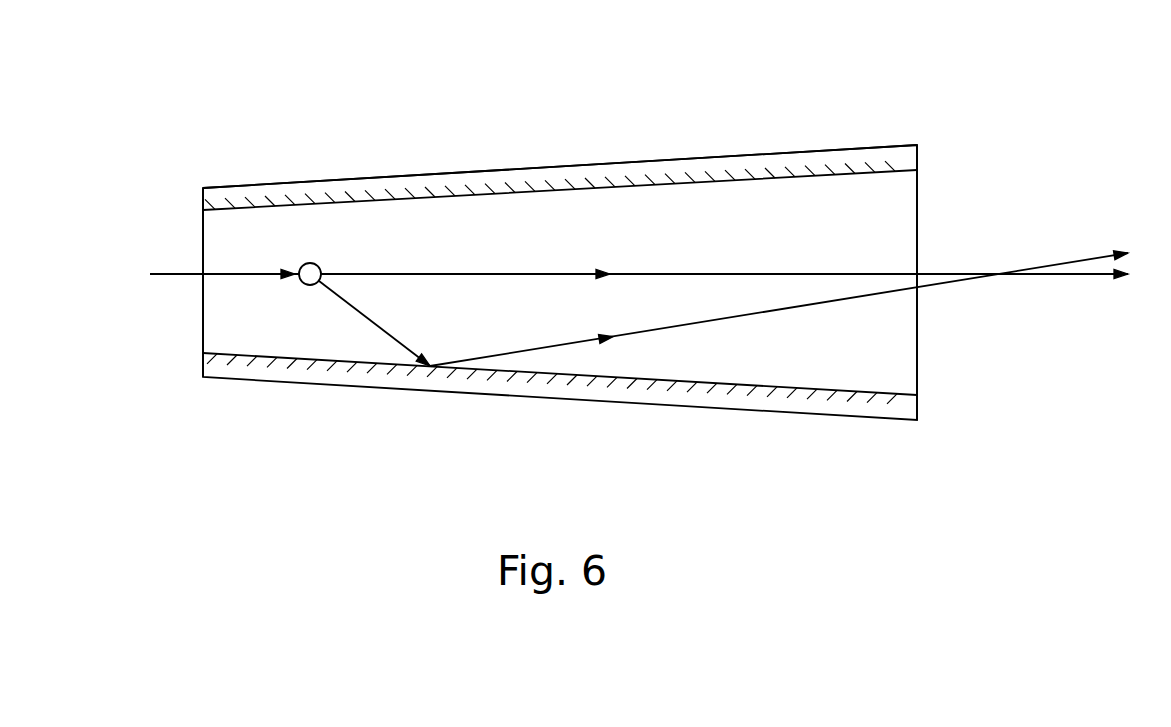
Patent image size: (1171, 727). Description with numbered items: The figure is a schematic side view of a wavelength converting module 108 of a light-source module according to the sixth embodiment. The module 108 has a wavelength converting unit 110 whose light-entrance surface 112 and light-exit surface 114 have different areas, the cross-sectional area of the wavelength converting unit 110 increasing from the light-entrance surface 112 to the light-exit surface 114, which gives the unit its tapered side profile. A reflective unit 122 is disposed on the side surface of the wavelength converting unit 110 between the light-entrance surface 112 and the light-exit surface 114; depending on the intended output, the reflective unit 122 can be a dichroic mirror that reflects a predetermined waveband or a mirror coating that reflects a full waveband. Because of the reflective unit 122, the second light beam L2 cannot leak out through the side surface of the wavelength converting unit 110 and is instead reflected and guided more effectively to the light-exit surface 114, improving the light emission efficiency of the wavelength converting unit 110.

The wavelength converting module 108 is at (134, 63).
The wavelength converting unit 110 is at (733, 180).
The light-entrance surface 112 is at (189, 310).
The light-exit surface 114 is at (934, 200).
The reflective unit 122 is at (469, 172).
The second light beam L2 is at (997, 278).